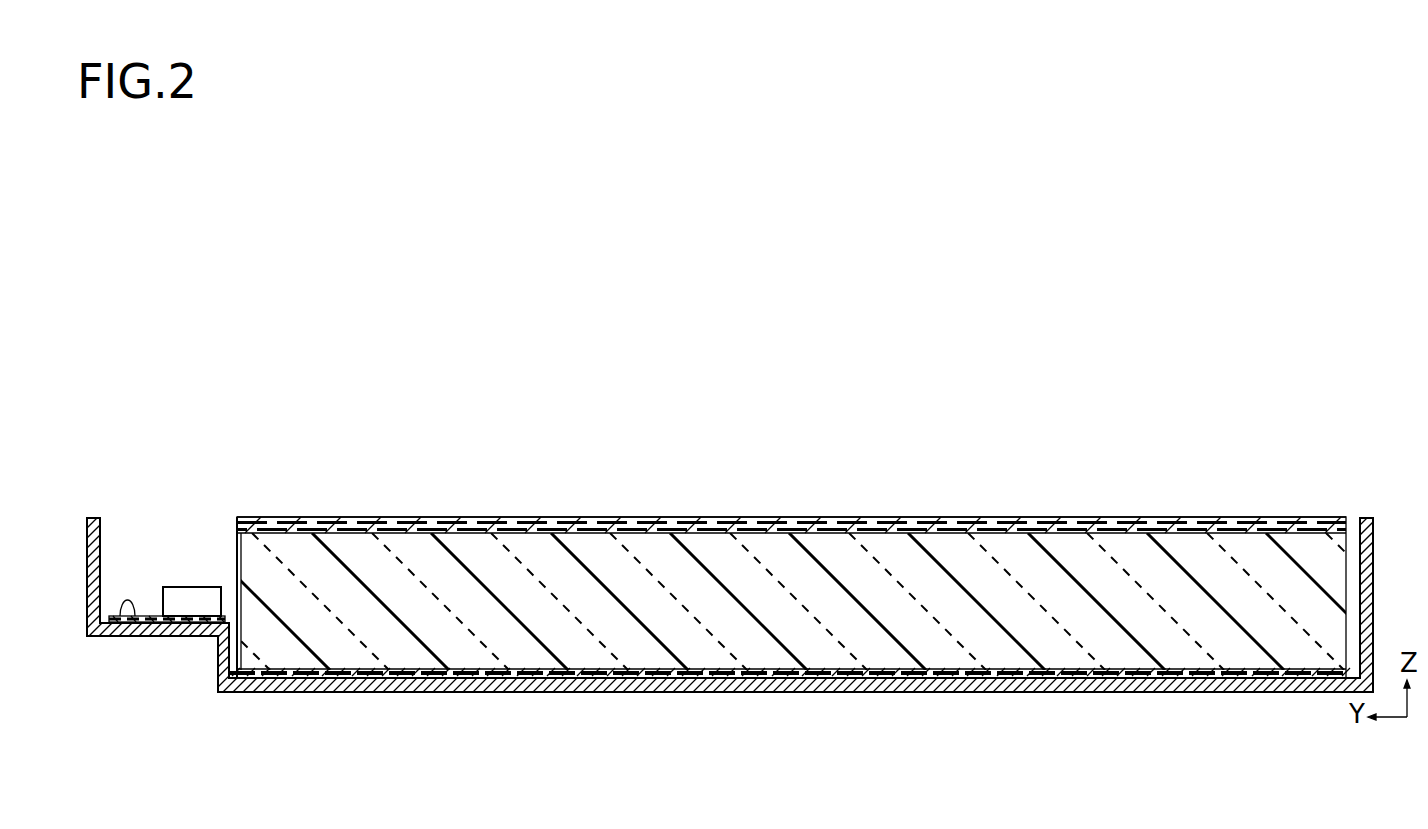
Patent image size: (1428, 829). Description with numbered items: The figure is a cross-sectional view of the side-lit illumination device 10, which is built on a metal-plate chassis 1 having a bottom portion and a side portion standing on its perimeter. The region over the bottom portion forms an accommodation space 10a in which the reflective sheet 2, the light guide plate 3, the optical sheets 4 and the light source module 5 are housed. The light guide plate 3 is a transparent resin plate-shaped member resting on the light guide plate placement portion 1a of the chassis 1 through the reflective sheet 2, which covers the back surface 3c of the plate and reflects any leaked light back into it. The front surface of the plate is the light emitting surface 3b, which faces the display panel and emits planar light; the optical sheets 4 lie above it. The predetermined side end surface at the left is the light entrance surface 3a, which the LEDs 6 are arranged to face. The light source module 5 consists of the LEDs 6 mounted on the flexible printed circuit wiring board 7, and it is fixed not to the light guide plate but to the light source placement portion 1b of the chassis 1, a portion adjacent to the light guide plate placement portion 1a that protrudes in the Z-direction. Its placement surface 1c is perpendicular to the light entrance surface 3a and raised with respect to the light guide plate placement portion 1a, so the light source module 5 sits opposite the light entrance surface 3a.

The chassis 1 is at (470, 687).
The light guide plate placement portion 1a is at (293, 692).
The light source placement portion 1b is at (187, 637).
The placement surface 1c is at (121, 618).
The reflective sheet 2 is at (520, 673).
The light guide plate 3 is at (420, 547).
The light entrance surface 3a is at (237, 550).
The light emitting surface 3b is at (345, 533).
The back surface 3c is at (367, 677).
The optical sheets 4 is at (493, 530).
The light source module 5 is at (153, 507).
The LEDs 6 is at (180, 594).
The flexible printed circuit wiring board 7 is at (152, 615).
The illumination device 10 is at (714, 589).
The accommodation space 10a is at (190, 553).